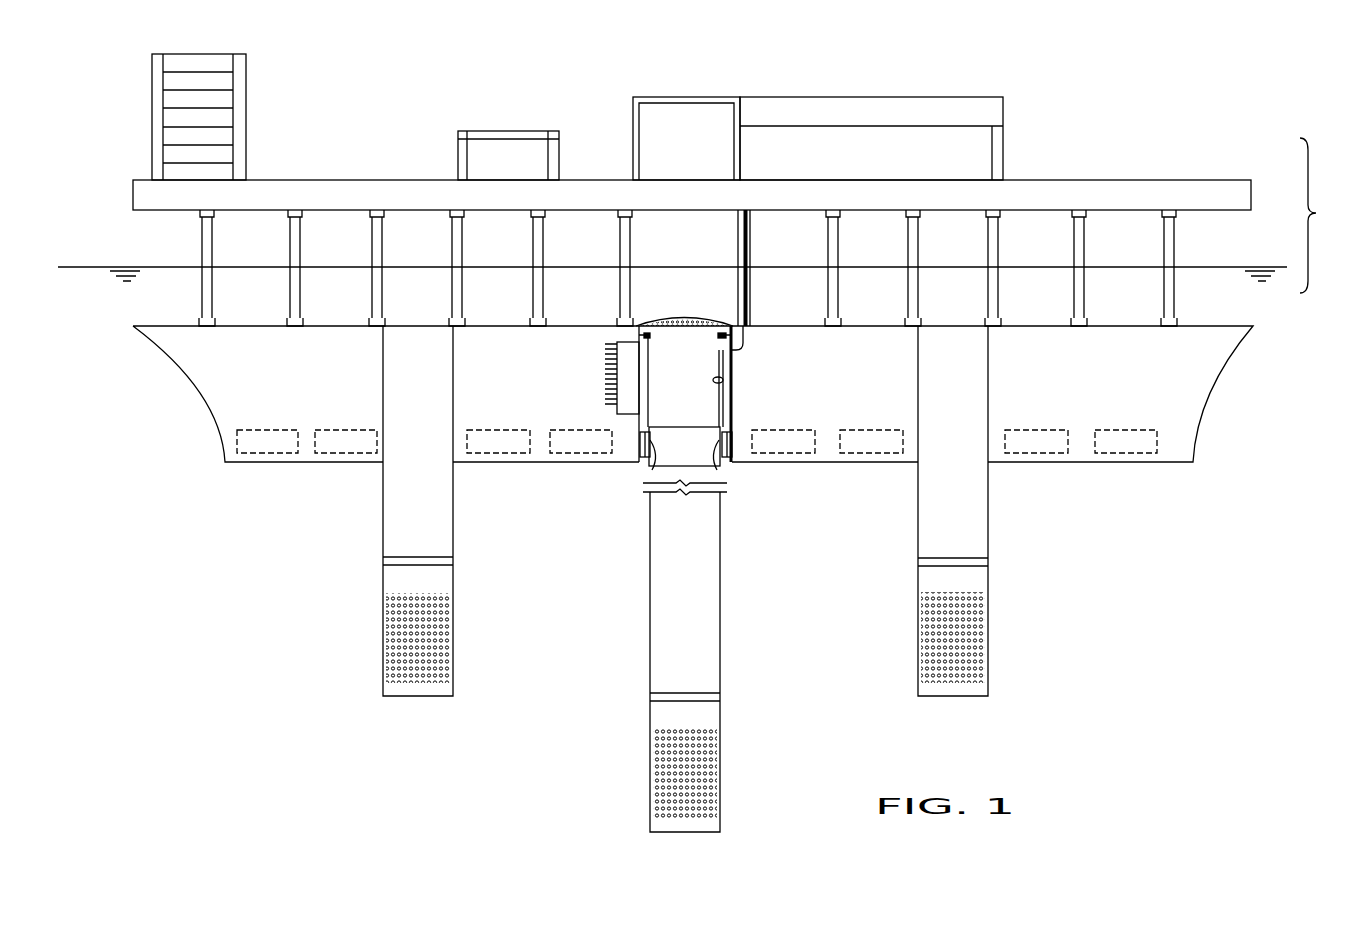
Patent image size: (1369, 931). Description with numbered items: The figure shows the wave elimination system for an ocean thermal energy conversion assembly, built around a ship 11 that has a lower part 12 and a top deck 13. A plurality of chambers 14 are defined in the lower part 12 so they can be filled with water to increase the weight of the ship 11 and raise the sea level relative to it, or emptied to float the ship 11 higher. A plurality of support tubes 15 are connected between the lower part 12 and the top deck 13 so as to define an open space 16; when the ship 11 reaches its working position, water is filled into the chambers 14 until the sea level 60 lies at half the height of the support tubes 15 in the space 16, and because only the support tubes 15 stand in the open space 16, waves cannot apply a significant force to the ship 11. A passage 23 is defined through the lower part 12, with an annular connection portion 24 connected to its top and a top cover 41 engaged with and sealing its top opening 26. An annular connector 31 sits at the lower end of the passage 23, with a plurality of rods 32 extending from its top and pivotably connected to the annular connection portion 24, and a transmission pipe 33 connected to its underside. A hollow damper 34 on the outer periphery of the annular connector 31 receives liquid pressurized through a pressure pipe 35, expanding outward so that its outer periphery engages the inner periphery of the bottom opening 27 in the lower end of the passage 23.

The ship 11 is at (1323, 215).
The lower part 12 is at (1233, 338).
The top deck 13 is at (1253, 192).
The chambers 14 is at (1128, 447).
The support tubes 15 is at (1080, 232).
The open space 16 is at (1233, 238).
The passage 23 is at (733, 387).
The annular connection portion 24 is at (740, 332).
The top opening 26 is at (700, 340).
The bottom opening 27 is at (652, 470).
The annular connector 31 is at (705, 458).
The rods 32 is at (636, 426).
The transmission pipe 33 is at (720, 612).
The hollow damper 34 is at (733, 440).
The pressure pipe 35 is at (746, 351).
The top cover 41 is at (653, 320).
The sea level 60 is at (78, 267).